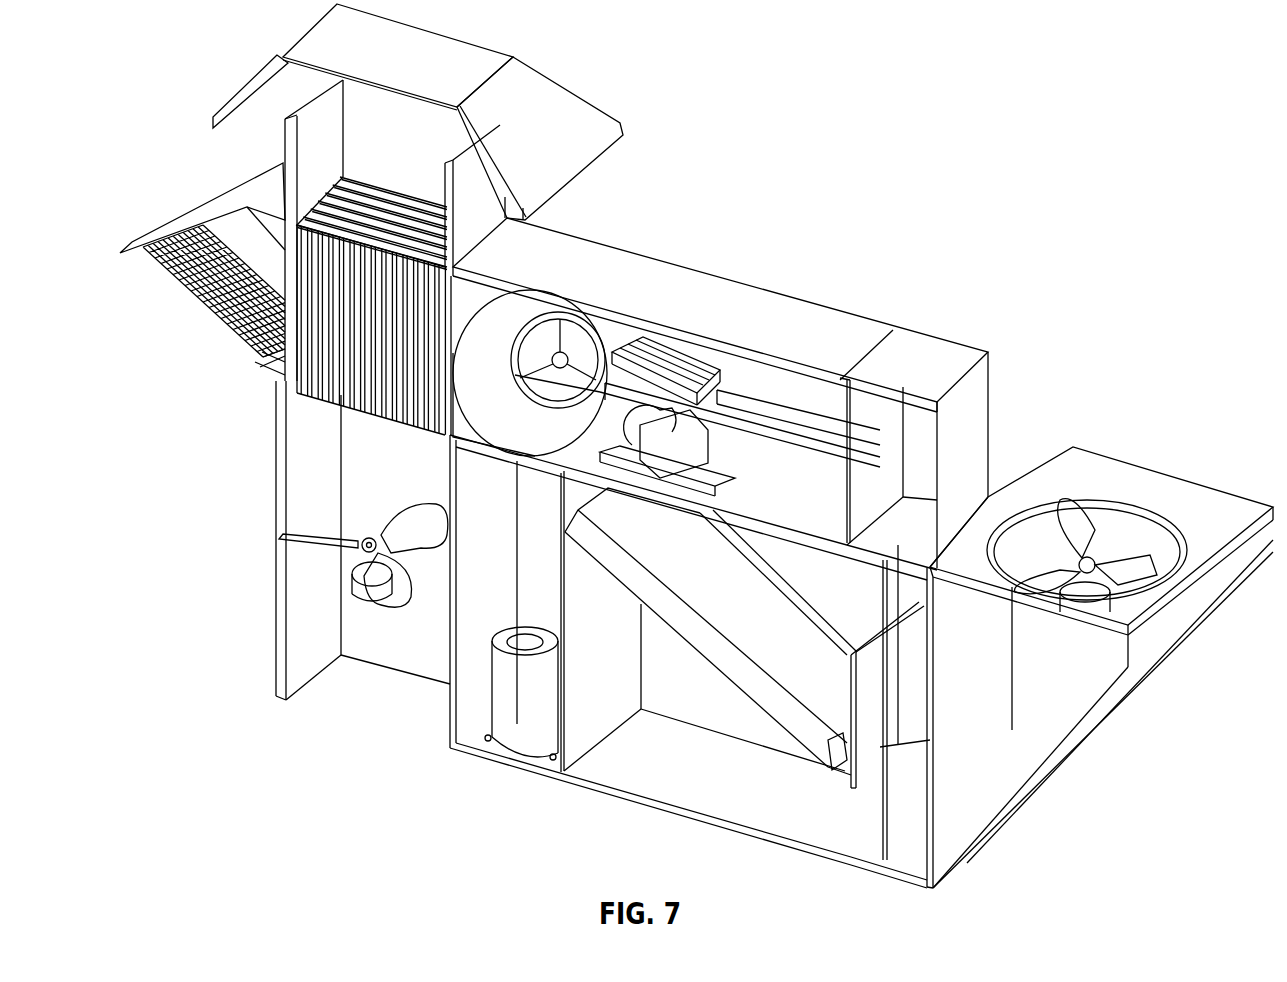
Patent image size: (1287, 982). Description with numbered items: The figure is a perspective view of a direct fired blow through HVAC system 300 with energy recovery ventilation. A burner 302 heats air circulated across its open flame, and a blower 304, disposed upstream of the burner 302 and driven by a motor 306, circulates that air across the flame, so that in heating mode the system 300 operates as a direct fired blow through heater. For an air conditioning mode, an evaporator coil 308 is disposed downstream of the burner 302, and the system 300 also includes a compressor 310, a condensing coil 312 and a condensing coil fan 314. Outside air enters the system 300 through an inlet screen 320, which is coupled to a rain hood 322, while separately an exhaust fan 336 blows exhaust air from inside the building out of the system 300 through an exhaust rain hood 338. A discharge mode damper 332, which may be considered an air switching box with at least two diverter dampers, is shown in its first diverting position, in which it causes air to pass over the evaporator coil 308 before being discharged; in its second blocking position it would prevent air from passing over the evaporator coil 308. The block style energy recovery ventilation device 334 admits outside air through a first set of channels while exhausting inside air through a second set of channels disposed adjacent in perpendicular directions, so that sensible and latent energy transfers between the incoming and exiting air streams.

The direct fired blow through HVAC system 300 is at (1065, 104).
The burner 302 is at (660, 350).
The blower 304 is at (560, 360).
The motor 306 is at (653, 450).
The evaporator coil 308 is at (699, 634).
The compressor 310 is at (518, 724).
The condensing coil 312 is at (1010, 763).
The condensing coil fan 314 is at (1078, 540).
The inlet screen 320 is at (203, 292).
The rain hood 322 is at (207, 205).
The discharge mode damper 332 is at (912, 614).
The energy recovery ventilation device 334 is at (355, 372).
The exhaust fan 336 is at (367, 579).
The exhaust rain hood 338 is at (533, 97).